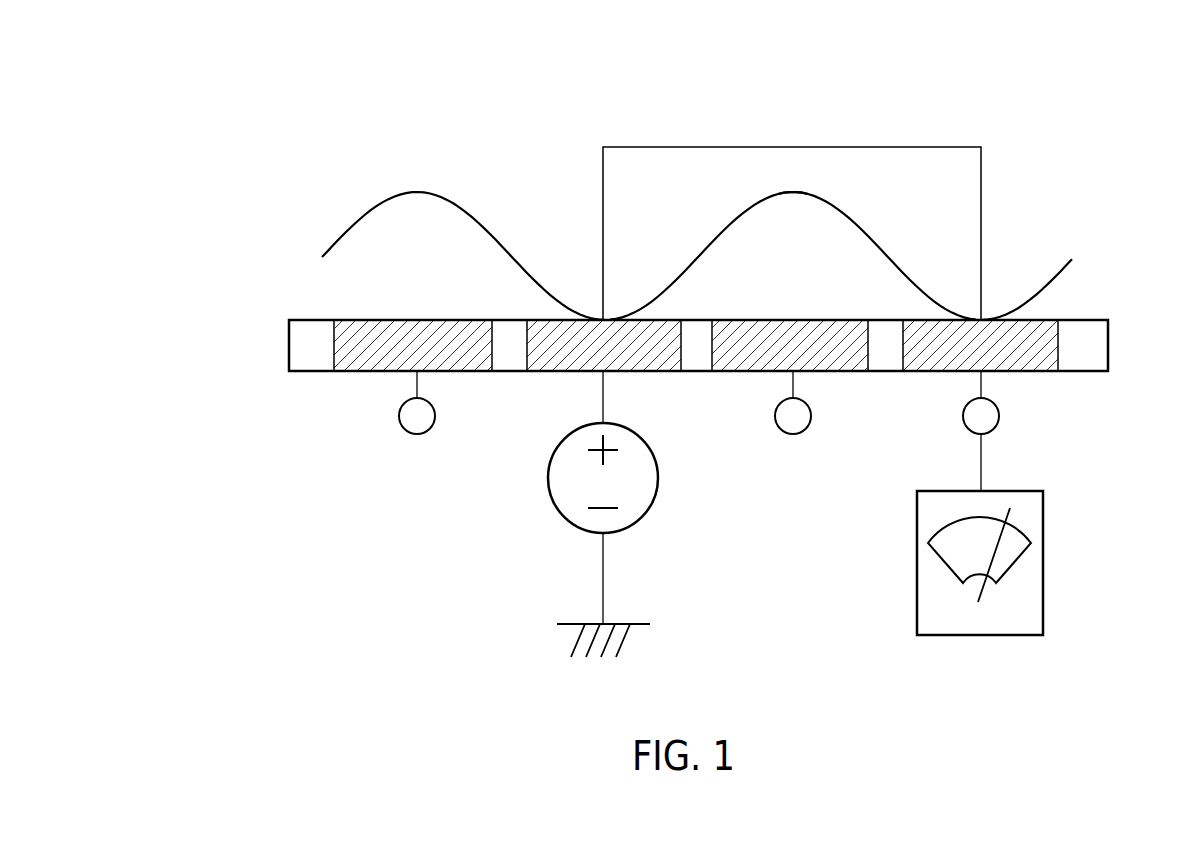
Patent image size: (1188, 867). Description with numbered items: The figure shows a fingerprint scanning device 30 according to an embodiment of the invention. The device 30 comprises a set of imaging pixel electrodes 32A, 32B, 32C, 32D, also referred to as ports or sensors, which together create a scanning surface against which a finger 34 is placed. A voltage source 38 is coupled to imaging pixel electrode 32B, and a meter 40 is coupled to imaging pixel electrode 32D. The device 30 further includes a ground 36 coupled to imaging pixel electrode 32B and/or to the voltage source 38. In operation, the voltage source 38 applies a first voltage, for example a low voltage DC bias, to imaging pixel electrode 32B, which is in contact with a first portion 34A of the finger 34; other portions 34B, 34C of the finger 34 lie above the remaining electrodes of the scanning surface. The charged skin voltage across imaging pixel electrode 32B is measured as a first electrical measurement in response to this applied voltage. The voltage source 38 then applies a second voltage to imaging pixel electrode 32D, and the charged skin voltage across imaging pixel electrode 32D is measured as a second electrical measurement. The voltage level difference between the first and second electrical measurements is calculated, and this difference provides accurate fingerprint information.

The fingerprint scanning device 30 is at (195, 125).
The imaging pixel electrode 32A is at (390, 320).
The imaging pixel electrode 32B is at (548, 320).
The imaging pixel electrode 32C is at (762, 320).
The imaging pixel electrode 32D is at (1030, 320).
The finger 34 is at (397, 175).
The first portion of finger 34A is at (610, 320).
The antinode of standing wave 34B is at (768, 193).
The second node of standing wave 34C is at (968, 320).
The ground 36 is at (627, 638).
The voltage source 38 is at (659, 470).
The meter 40 is at (1044, 563).